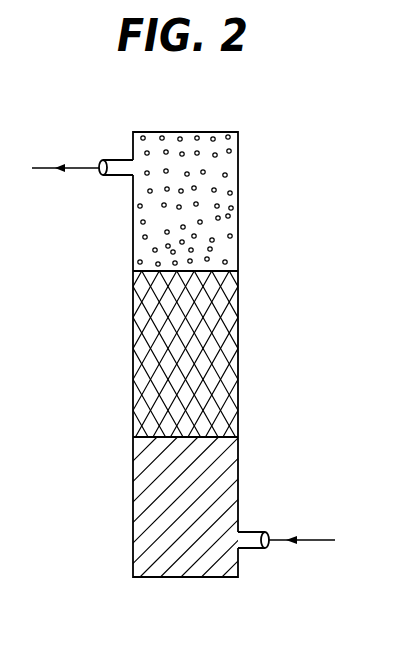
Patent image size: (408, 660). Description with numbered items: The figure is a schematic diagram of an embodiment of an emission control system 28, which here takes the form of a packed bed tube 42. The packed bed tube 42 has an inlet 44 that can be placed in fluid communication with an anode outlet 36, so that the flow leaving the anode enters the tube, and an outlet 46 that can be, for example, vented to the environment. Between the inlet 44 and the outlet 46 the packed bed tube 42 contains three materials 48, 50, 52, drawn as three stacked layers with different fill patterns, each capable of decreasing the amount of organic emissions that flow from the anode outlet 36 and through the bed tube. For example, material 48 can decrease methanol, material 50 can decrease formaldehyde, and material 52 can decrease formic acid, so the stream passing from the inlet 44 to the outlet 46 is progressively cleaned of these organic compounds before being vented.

The emission control system 28 is at (283, 225).
The anode outlet 36 is at (319, 541).
The packed bed tube 42 is at (240, 372).
The inlet 44 is at (252, 530).
The outlet 46 is at (117, 158).
The material 48 is at (142, 512).
The material 50 is at (142, 382).
The material 52 is at (142, 243).